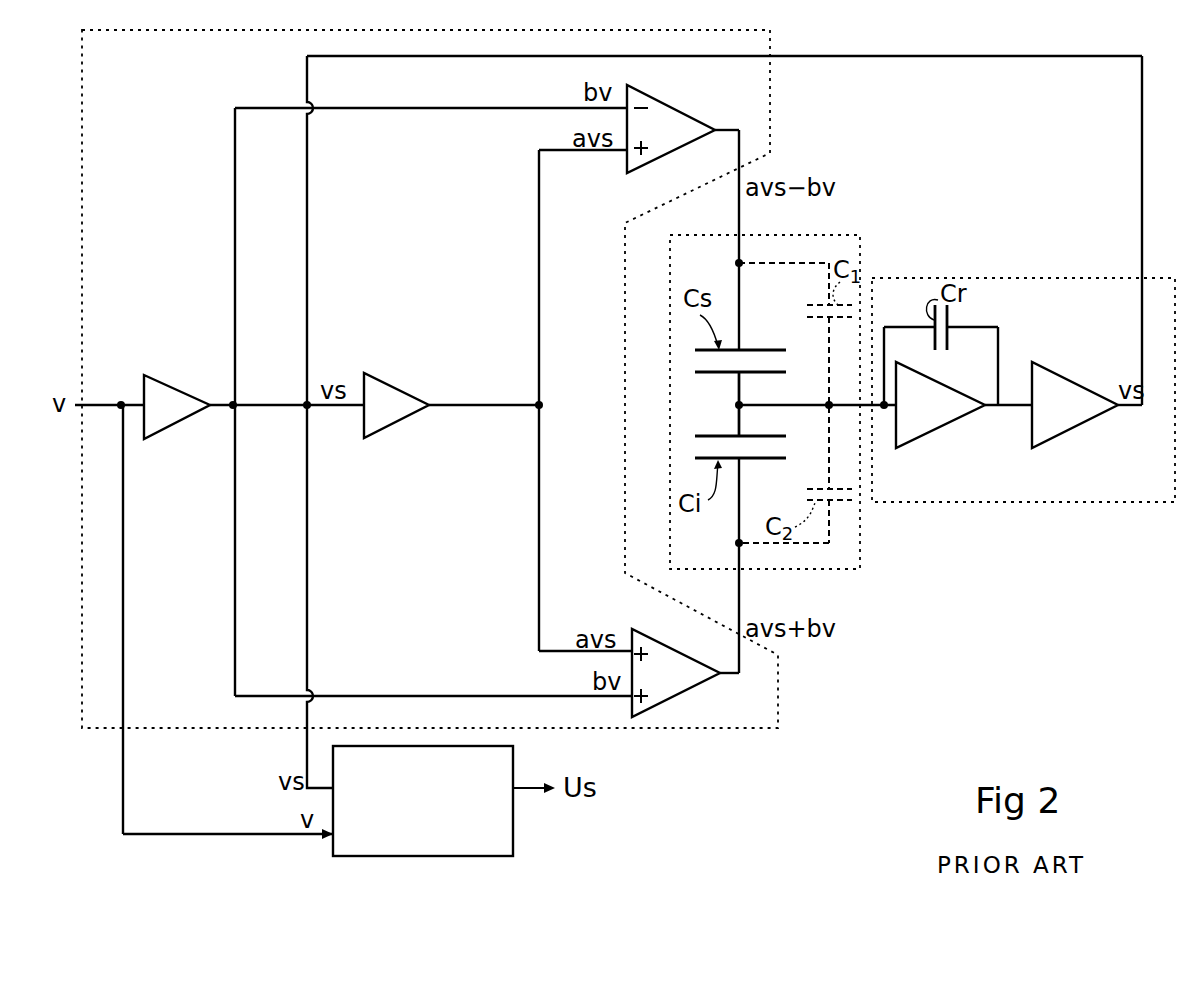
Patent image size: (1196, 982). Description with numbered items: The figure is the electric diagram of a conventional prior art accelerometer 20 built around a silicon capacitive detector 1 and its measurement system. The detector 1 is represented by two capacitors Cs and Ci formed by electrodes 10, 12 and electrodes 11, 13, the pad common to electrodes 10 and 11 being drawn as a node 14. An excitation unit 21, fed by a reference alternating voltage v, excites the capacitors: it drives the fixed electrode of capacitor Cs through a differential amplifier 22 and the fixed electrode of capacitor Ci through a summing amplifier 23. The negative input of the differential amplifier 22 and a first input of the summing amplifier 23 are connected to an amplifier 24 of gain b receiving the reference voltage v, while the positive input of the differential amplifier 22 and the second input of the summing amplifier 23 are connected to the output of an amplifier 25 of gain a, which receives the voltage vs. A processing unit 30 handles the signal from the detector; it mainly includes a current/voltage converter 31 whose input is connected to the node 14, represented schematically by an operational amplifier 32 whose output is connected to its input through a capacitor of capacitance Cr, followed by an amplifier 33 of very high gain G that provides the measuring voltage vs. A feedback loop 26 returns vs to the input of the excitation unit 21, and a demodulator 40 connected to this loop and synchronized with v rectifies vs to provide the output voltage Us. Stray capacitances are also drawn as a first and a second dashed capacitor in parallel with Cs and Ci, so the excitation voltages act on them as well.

The detector 1 is at (830, 569).
The electrode 10 is at (760, 376).
The electrode 11 is at (758, 436).
The electrode 12 is at (758, 350).
The electrode 13 is at (758, 460).
The node 14 is at (739, 405).
The accelerometer 20 is at (1010, 642).
The excitation unit 21 is at (778, 697).
The differential amplifier 22 is at (672, 96).
The summing amplifier 23 is at (688, 690).
The amplifier 24 is at (158, 375).
The amplifier 25 is at (398, 383).
The feedback loop 26 is at (887, 58).
The processing unit 30 is at (1037, 503).
The current/voltage converter 31 is at (951, 404).
The operational amplifier 32 is at (957, 430).
The amplifier 33 is at (1080, 440).
The demodulator 40 is at (405, 746).